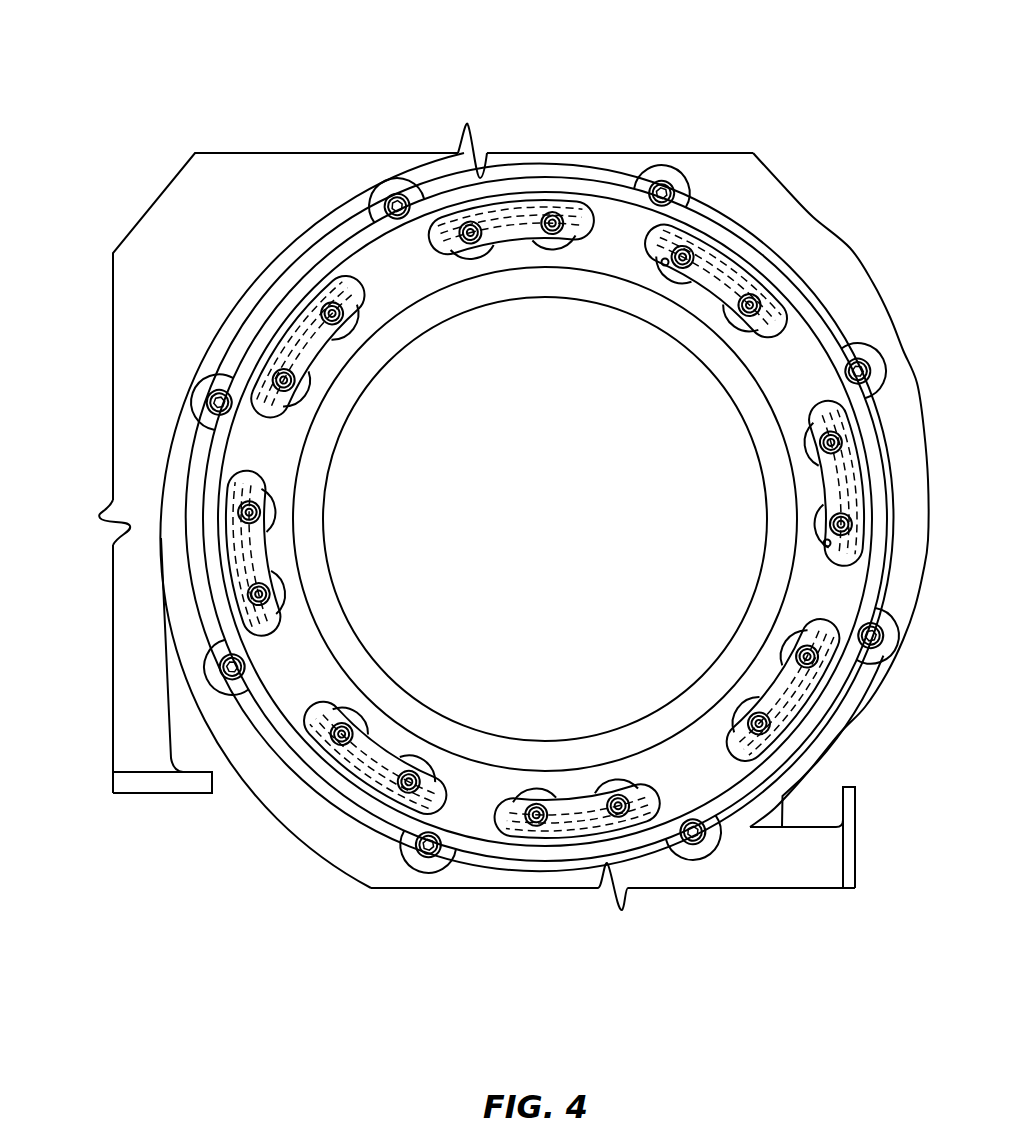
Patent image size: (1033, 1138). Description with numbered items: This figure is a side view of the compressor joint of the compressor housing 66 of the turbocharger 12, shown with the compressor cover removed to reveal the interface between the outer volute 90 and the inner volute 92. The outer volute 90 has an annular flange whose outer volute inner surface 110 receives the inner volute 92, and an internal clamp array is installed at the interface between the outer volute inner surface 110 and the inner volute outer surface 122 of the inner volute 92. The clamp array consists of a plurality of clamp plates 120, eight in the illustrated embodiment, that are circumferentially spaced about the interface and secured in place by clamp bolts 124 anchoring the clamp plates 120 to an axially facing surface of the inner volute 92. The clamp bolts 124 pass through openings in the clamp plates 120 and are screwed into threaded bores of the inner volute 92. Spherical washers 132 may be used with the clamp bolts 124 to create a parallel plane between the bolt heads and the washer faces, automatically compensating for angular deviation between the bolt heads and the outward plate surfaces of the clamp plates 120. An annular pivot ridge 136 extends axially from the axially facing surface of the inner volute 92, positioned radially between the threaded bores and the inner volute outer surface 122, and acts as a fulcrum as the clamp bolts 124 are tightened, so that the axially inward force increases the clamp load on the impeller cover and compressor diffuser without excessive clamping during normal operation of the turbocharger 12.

The turbocharger 12 is at (140, 13).
The compressor housing 66 is at (172, 10).
The outer volute 90 is at (203, 232).
The inner volute 92 is at (815, 495).
The outer volute inner surface 110 is at (613, 198).
The clamp plates 120 is at (737, 263).
The inner volute outer surface 122 is at (842, 328).
The clamp bolts 124 is at (692, 252).
The spherical washers 132 is at (683, 250).
The annular pivot ridge 136 is at (372, 256).